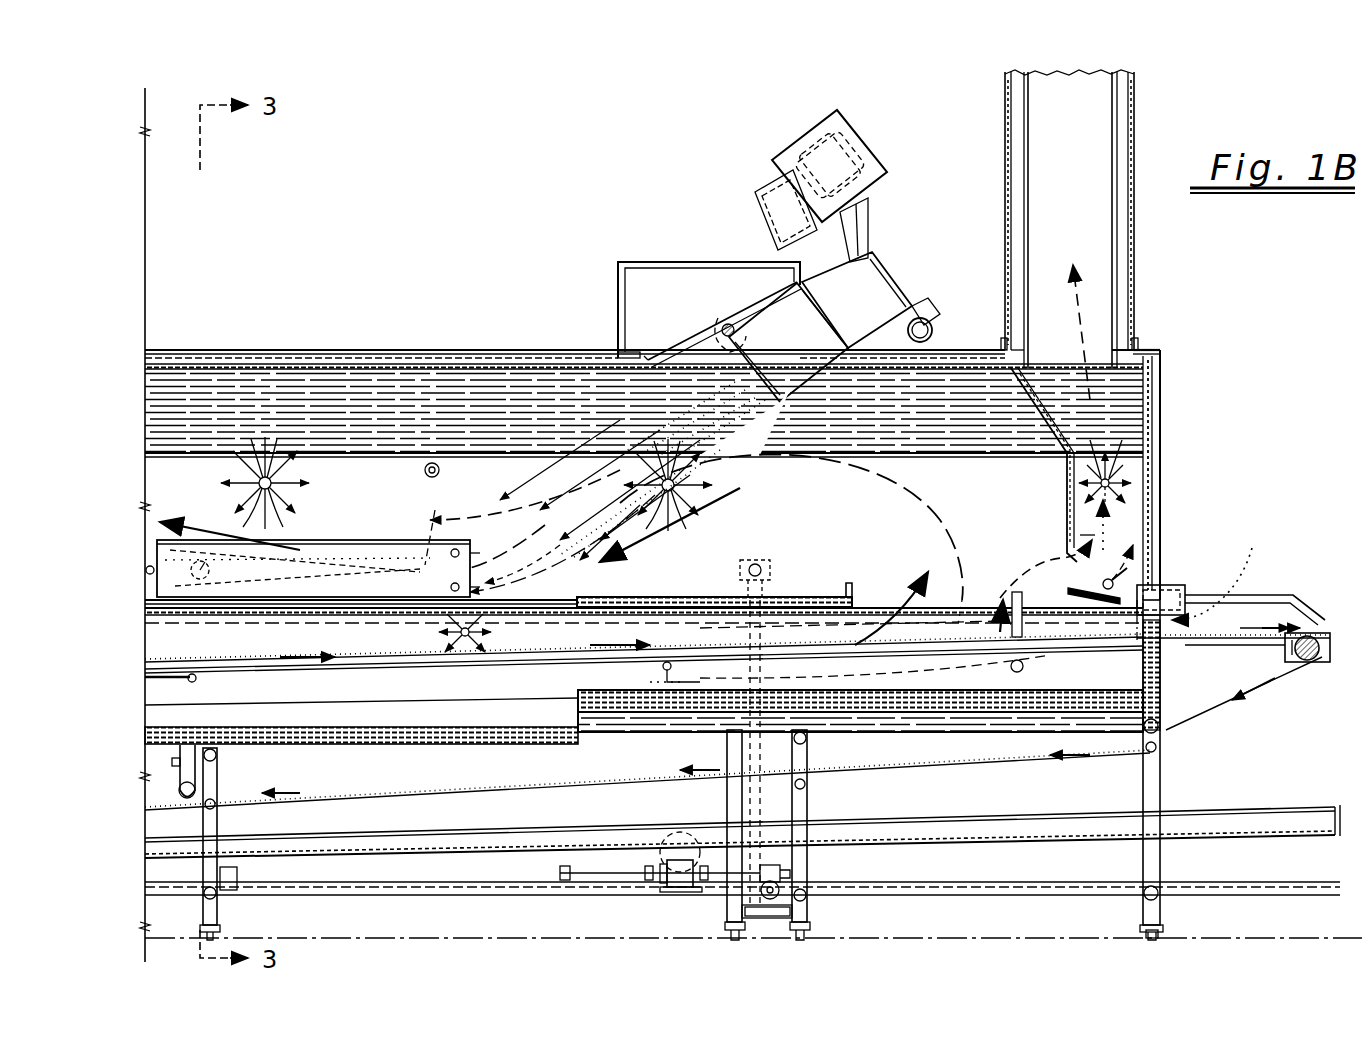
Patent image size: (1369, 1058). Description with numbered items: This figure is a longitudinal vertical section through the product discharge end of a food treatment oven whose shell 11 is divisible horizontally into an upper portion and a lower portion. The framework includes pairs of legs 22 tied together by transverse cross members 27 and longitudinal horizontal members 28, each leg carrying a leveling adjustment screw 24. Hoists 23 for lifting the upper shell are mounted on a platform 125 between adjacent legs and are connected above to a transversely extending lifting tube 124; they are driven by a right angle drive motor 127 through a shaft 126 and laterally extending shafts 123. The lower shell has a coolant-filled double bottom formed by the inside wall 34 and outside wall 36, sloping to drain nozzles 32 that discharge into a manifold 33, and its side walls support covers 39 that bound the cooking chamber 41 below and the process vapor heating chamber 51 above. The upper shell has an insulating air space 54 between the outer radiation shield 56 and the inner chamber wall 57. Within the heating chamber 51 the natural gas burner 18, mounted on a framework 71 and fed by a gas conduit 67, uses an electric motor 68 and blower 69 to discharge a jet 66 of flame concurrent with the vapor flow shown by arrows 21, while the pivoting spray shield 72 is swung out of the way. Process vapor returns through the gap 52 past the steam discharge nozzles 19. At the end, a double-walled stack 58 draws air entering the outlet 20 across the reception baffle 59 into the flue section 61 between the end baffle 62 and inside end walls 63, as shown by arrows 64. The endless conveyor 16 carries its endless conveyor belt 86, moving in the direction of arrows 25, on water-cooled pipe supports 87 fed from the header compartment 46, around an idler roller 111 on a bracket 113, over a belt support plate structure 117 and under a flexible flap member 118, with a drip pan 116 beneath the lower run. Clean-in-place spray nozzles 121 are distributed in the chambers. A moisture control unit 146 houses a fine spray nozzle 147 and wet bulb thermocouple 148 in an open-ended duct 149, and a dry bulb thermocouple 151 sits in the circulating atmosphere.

The shell 11 is at (357, 332).
The endless conveyor 16 is at (1232, 627).
The natural gas burner 18 is at (884, 154).
The steam discharge nozzles 19 is at (1022, 668).
The outlet 20 is at (1219, 573).
The arrows 21 is at (170, 522).
The legs 22 is at (218, 905).
The hoists 23 is at (740, 742).
The adjustment screw 24 is at (1140, 924).
The arrows 25 is at (285, 650).
The cross members 27 is at (218, 756).
The horizontal members 28 is at (345, 893).
The drain nozzles 32 is at (195, 730).
The manifold 33 is at (186, 808).
The inside wall 34 is at (578, 700).
The outside wall 36 is at (578, 740).
The covers 39 is at (608, 598).
The cooking chamber 41 is at (361, 665).
The upper compartment 46 is at (1160, 675).
The process vapor heating chamber 51 is at (650, 539).
The gap 52 is at (870, 622).
The insulating air space 54 is at (403, 352).
The outer radiation shield 56 is at (455, 358).
The inner chamber wall 57 is at (486, 370).
The double-walled stack 58 is at (1118, 140).
The reception baffle 59 is at (1125, 566).
The flue section 61 is at (1088, 534).
The end baffle 62 is at (1063, 500).
The inside end walls 63 is at (1128, 472).
The arrows 64 is at (1068, 272).
The jet 66 is at (740, 412).
The gas conduit 67 is at (930, 328).
The electric motor 68 is at (848, 140).
The blower 69 is at (862, 292).
The framework 71 is at (712, 265).
The spray shield 72 is at (722, 318).
The endless conveyor belt 86 is at (1200, 722).
The pipe supports 87 is at (675, 684).
The idler roller 111 is at (1322, 632).
The bracket 113 is at (1316, 664).
The drip pan 116 is at (648, 840).
The belt support plate structure 117 is at (1225, 650).
The flexible flap member 118 is at (1180, 593).
The spray nozzles 121 is at (282, 478).
The laterally extending shafts 123 is at (785, 888).
The lifting tube 124 is at (765, 565).
The platform 125 is at (765, 912).
The shaft 126 is at (565, 885).
The right angle drive motor 127 is at (690, 856).
The moisture control unit 146 is at (368, 540).
The fine spray nozzle 147 is at (522, 517).
The thermocouple 148 is at (205, 560).
The open-ended duct 149 is at (505, 566).
The thermocouple 151 is at (440, 470).